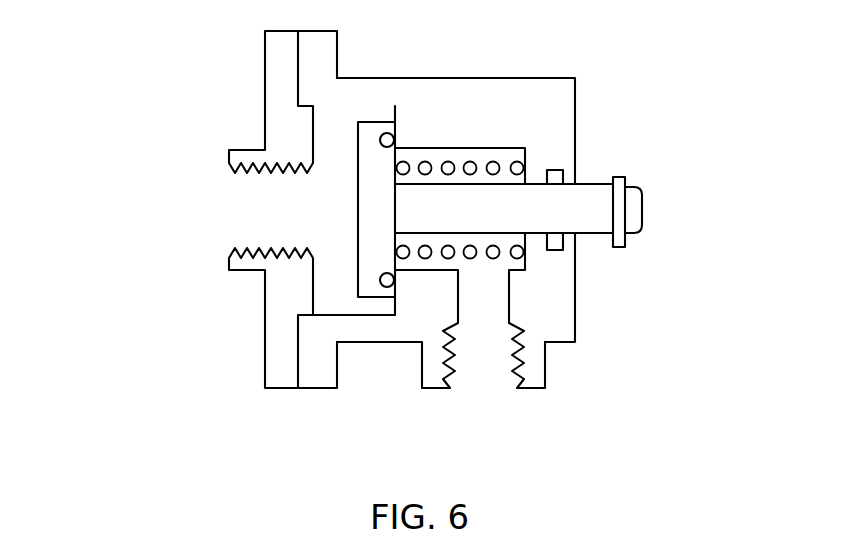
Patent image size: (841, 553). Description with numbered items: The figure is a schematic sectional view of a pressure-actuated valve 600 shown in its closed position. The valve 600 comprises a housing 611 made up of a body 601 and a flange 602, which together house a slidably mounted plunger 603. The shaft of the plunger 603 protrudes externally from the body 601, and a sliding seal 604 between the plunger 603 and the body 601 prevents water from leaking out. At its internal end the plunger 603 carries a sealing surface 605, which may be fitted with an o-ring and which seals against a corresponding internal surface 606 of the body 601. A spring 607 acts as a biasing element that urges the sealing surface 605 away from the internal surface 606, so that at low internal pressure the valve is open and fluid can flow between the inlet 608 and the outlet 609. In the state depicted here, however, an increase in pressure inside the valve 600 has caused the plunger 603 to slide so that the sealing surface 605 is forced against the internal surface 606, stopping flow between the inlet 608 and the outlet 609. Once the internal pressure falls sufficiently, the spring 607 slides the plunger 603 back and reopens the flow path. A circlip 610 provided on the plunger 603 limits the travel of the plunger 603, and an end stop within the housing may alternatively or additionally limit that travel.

The valve 600 is at (122, 90).
The body 601 is at (537, 97).
The flange 602 is at (280, 92).
The plunger 603 is at (632, 208).
The sliding seal 604 is at (555, 250).
The sealing surface 605 is at (393, 134).
The internal surface 606 is at (397, 143).
The spring 607 is at (520, 168).
The inlet 608 is at (482, 377).
The outlet 609 is at (247, 212).
The circlip 610 is at (618, 247).
The housing 611 is at (300, 390).